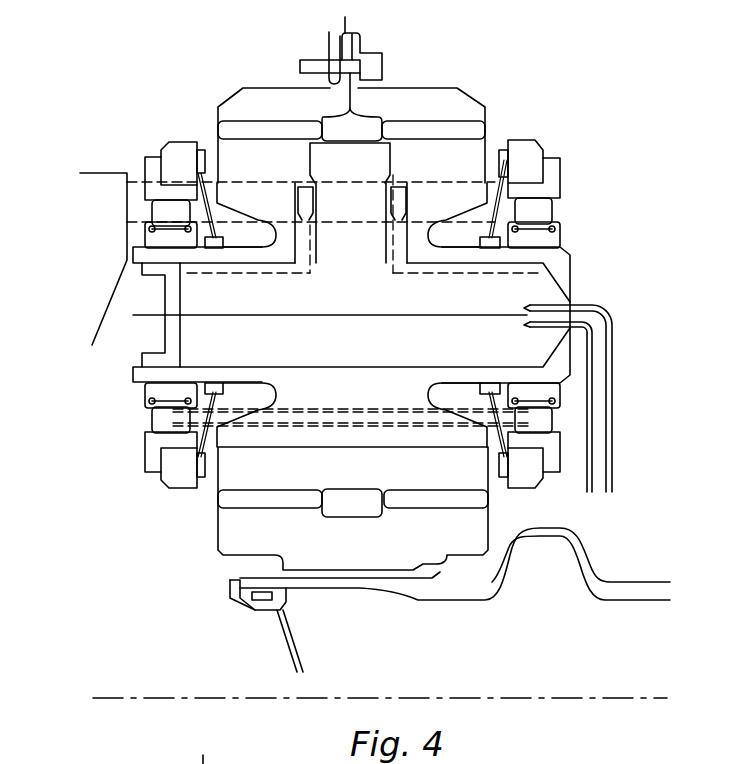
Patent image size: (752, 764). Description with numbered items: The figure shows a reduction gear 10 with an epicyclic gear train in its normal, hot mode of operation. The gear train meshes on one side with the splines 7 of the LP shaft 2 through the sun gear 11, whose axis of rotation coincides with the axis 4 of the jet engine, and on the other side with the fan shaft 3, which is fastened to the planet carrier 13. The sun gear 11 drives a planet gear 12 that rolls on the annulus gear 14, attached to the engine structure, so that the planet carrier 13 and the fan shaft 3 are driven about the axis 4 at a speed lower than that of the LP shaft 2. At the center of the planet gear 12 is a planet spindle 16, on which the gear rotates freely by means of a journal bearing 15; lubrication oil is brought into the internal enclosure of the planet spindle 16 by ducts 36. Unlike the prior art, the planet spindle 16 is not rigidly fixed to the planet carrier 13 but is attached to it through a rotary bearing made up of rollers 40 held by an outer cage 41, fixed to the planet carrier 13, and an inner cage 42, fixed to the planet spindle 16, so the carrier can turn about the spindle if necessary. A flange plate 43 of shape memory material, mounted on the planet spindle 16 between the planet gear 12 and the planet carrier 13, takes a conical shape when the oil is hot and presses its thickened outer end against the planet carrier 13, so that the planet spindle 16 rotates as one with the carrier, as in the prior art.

The reduction gear 10 is at (186, 60).
The fan shaft 3 is at (105, 183).
The planet carrier 13 is at (178, 153).
The journal bearing 15 is at (430, 182).
The annulus gear 14 is at (460, 103).
The planet gear 12 is at (463, 157).
The outer rolling bearing cage 41 is at (548, 172).
The rollers 40 is at (545, 207).
The flange plate 43 is at (500, 210).
The inner rolling bearing cage 42 is at (548, 242).
The planet spindle 16 is at (560, 268).
The ducts 36 is at (600, 373).
The sun gear 11 is at (228, 533).
The splines 7 is at (331, 588).
The LP shaft 2 is at (493, 583).
The axis 4 is at (160, 698).